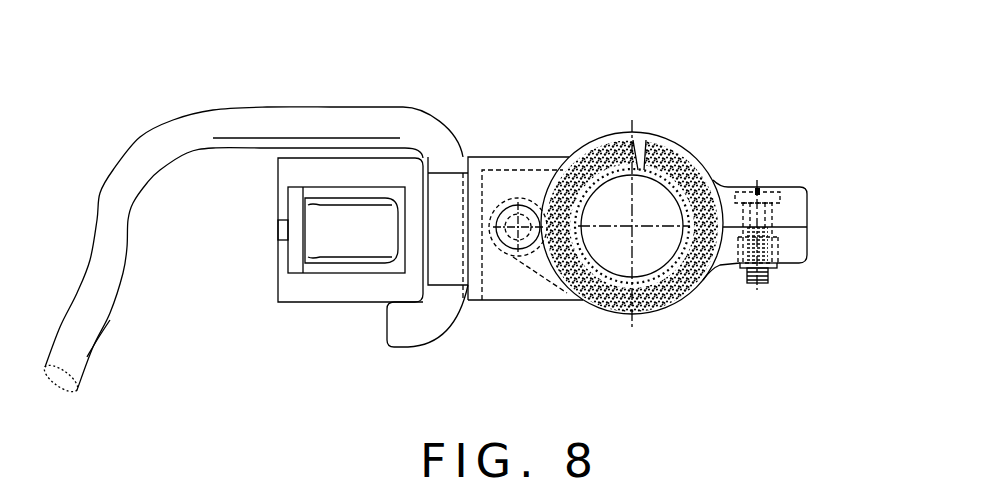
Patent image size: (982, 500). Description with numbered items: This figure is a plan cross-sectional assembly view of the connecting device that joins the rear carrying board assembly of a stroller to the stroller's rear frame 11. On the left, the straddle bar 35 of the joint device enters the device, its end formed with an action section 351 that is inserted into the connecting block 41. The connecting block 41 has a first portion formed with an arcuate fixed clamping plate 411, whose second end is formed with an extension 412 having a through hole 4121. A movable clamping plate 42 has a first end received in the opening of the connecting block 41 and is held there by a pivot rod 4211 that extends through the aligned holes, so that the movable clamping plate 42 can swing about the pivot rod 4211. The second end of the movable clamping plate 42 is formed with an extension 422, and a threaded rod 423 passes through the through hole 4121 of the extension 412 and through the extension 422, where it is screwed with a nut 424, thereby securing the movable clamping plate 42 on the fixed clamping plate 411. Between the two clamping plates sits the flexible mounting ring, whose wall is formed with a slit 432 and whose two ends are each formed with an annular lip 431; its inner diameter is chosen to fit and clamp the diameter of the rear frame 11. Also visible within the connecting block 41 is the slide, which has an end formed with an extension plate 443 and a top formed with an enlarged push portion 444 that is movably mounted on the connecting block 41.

The straddle bar 35 is at (190, 135).
The connecting block 41 is at (292, 290).
The enlarged push portion 444 is at (330, 244).
The extension plate 443 is at (443, 270).
The action section 351 is at (445, 167).
The fixed clamping plate 411 is at (512, 163).
The pivot rod 4211 is at (510, 247).
The movable clamping plate 42 is at (617, 315).
The annular lip 431 is at (647, 315).
The slit 432 is at (647, 140).
The rear frame 11 is at (698, 160).
The extension 412 is at (800, 212).
The extension 422 is at (798, 240).
The through hole 4121 is at (790, 207).
The threaded rod 423 is at (758, 187).
The nut 424 is at (787, 267).